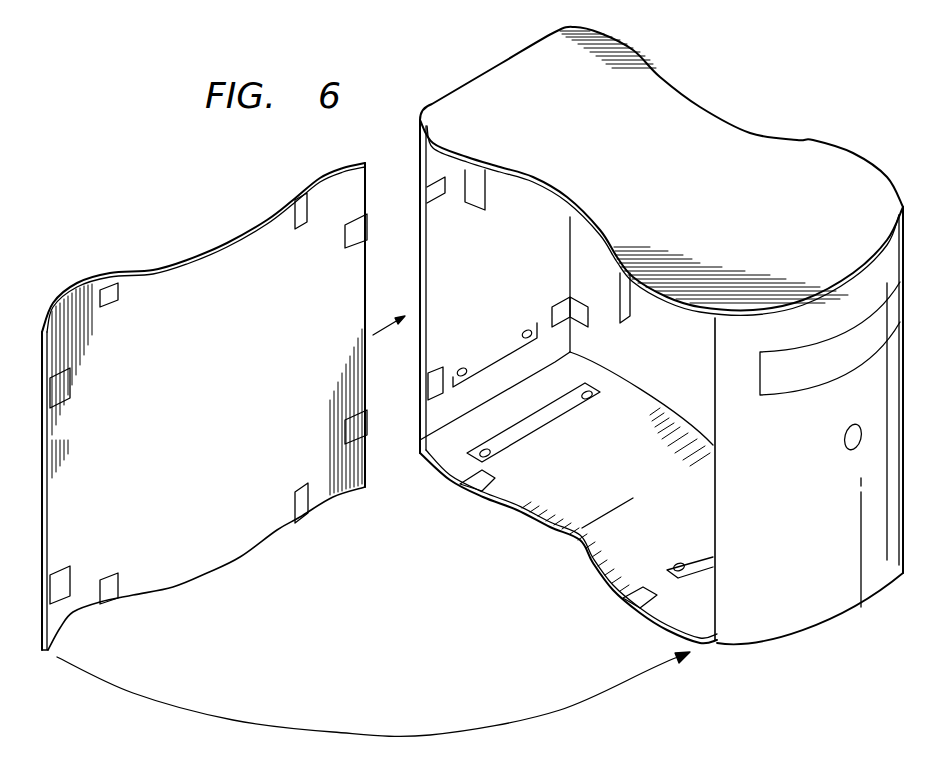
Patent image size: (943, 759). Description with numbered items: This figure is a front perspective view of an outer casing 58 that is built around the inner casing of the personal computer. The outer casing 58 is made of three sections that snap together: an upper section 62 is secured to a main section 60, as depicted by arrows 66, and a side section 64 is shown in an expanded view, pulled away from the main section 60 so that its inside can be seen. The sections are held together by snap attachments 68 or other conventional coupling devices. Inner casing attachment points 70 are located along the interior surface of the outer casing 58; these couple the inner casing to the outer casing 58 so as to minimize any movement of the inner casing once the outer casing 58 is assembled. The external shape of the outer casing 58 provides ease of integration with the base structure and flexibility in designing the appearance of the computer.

The outer casing 58 is at (665, 355).
The main section 60 is at (855, 634).
The upper section 62 is at (648, 158).
The side section 64 is at (112, 495).
The arrows 66 is at (468, 205).
The snap attachments 68 is at (303, 508).
The inner casing attachment points 70 is at (503, 357).